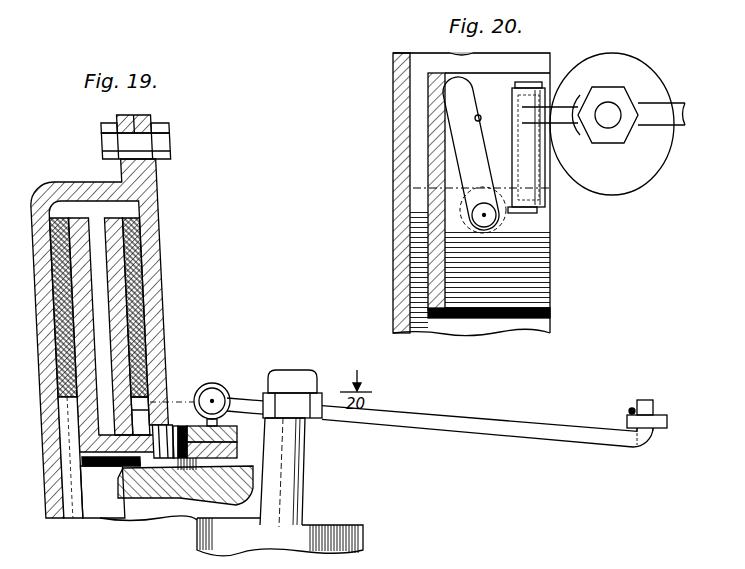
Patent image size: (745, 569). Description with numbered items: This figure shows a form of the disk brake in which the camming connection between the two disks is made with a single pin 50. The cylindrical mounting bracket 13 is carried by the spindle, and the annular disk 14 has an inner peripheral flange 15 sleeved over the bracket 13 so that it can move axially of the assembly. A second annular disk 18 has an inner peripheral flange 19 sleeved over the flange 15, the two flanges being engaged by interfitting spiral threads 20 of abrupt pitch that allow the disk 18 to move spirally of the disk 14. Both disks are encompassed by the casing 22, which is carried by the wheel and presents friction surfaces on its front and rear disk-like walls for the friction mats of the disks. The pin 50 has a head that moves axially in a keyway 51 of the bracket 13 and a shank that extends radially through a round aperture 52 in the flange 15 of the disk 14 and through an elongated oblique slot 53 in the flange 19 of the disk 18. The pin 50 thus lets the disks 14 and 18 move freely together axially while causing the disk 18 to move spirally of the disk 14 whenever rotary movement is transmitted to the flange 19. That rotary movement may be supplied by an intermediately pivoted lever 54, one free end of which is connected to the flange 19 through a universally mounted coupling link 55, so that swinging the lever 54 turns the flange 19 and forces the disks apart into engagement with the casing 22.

In FIG. 19, the cylindrical mounting bracket 13 is at (168, 489).
In FIG. 19, the annular disk 14 is at (56, 334).
In FIG. 20, the annular disk 14 is at (393, 82).
In FIG. 19, the inner peripheral flange 15 is at (110, 462).
In FIG. 20, the inner peripheral flange 15 is at (482, 57).
In FIG. 19, the annular disk 18 is at (112, 334).
In FIG. 20, the annular disk 18 is at (428, 110).
In FIG. 19, the inner peripheral flange 19 is at (232, 437).
In FIG. 20, the inner peripheral flange 19 is at (497, 80).
In FIG. 19, the spiral threads 20 is at (70, 457).
In FIG. 19, the casing 22 is at (37, 191).
In FIG. 19, the pin 50 is at (136, 433).
In FIG. 20, the pin 50 is at (496, 217).
In FIG. 19, the keyway 51 is at (99, 470).
In FIG. 19, the round aperture 52 is at (276, 463).
In FIG. 20, the round aperture 52 is at (468, 196).
In FIG. 19, the elongated oblique slot 53 is at (175, 424).
In FIG. 20, the elongated oblique slot 53 is at (481, 119).
In FIG. 19, the intermediately pivoted lever 54 is at (415, 415).
In FIG. 20, the intermediately pivoted lever 54 is at (645, 106).
In FIG. 19, the universally mounted coupling link 55 is at (222, 386).
In FIG. 20, the universally mounted coupling link 55 is at (545, 153).